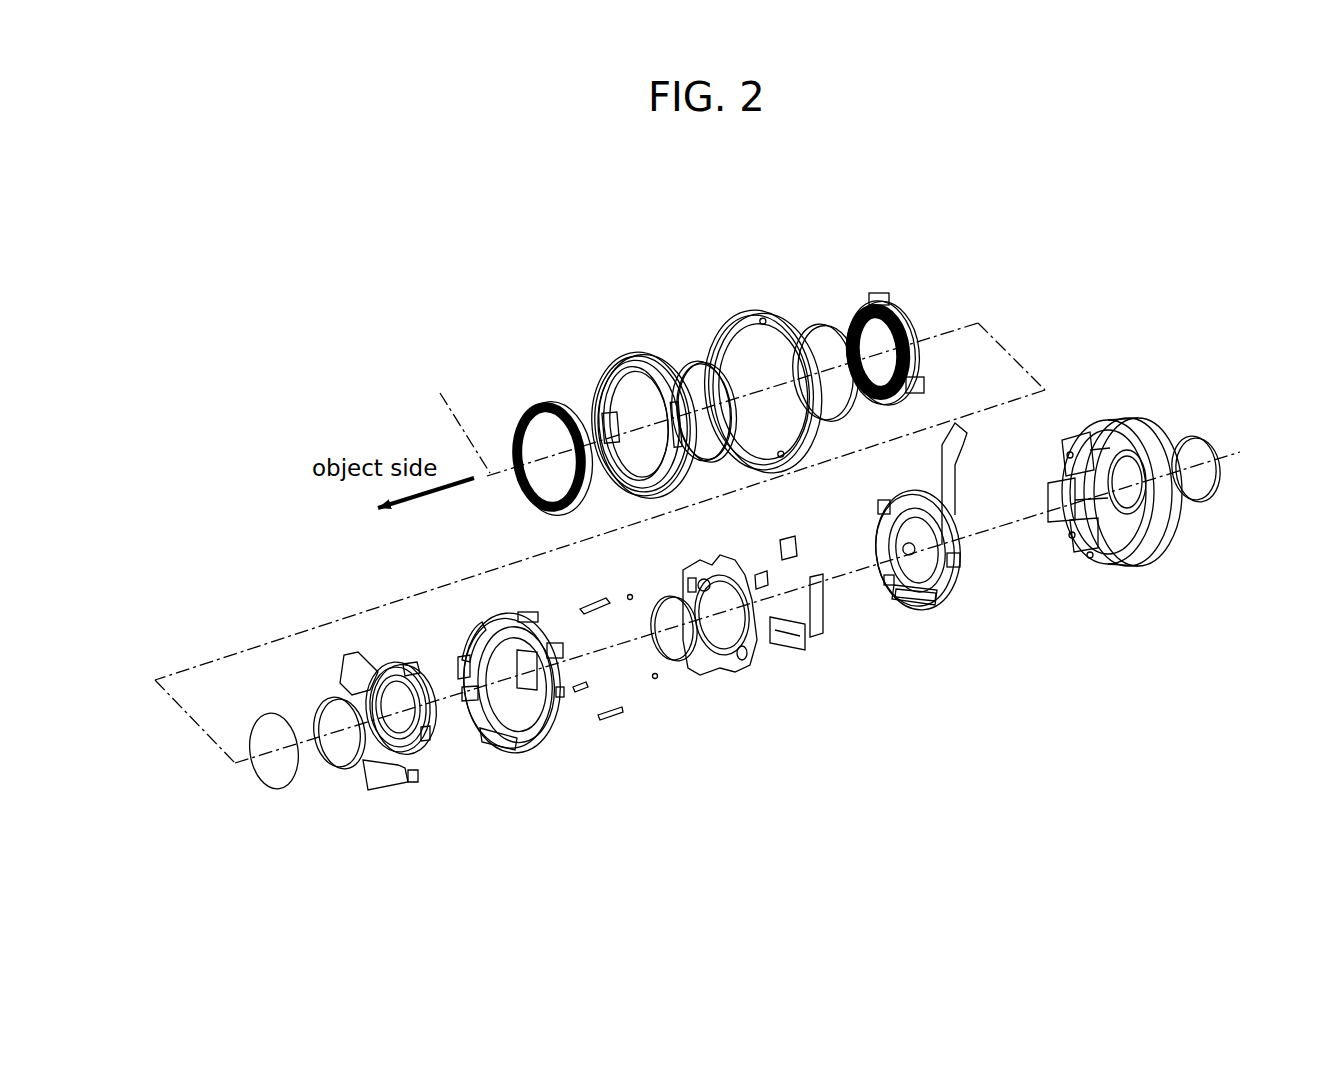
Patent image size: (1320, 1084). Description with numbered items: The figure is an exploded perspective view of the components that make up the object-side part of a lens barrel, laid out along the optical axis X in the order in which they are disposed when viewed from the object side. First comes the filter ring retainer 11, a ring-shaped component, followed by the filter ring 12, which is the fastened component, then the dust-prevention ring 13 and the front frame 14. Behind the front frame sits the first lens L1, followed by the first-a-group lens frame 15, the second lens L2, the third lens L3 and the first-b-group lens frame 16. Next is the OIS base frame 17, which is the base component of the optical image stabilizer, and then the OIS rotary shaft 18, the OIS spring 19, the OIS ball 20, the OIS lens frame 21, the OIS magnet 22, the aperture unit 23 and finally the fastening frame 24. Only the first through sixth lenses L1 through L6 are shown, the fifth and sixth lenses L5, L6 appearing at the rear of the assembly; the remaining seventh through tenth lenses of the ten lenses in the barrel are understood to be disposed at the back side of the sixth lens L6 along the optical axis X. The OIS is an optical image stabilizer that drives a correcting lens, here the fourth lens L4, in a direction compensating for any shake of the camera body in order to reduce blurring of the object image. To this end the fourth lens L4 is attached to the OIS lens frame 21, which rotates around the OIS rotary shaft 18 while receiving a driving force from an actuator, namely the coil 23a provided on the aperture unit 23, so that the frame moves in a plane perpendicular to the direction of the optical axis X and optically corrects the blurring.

The filter ring retainer 11 is at (520, 392).
The filter ring 12 is at (606, 343).
The dust-prevention ring 13 is at (678, 343).
The front frame 14 is at (722, 300).
The first lens L1 is at (816, 343).
The 1a-group lens frame 15 is at (856, 298).
The 1b-group lens frame 16 is at (430, 775).
The OIS base frame 17 is at (524, 765).
The OIS rotary shaft 18 is at (582, 692).
The OIS spring 19 is at (603, 710).
The OIS ball 20 is at (630, 600).
The OIS lens frame 21 is at (750, 690).
The OIS magnet 22 is at (792, 558).
The aperture unit 23 is at (923, 627).
The coil 23a is at (955, 580).
The fastening frame 24 is at (1118, 583).
The second lens L2 is at (275, 766).
The third lens L3 is at (338, 752).
The fourth lens L4 is at (672, 636).
The fifth lens L5 is at (1190, 452).
The sixth lens L6 is at (1198, 470).
The optical axis X is at (697, 543).